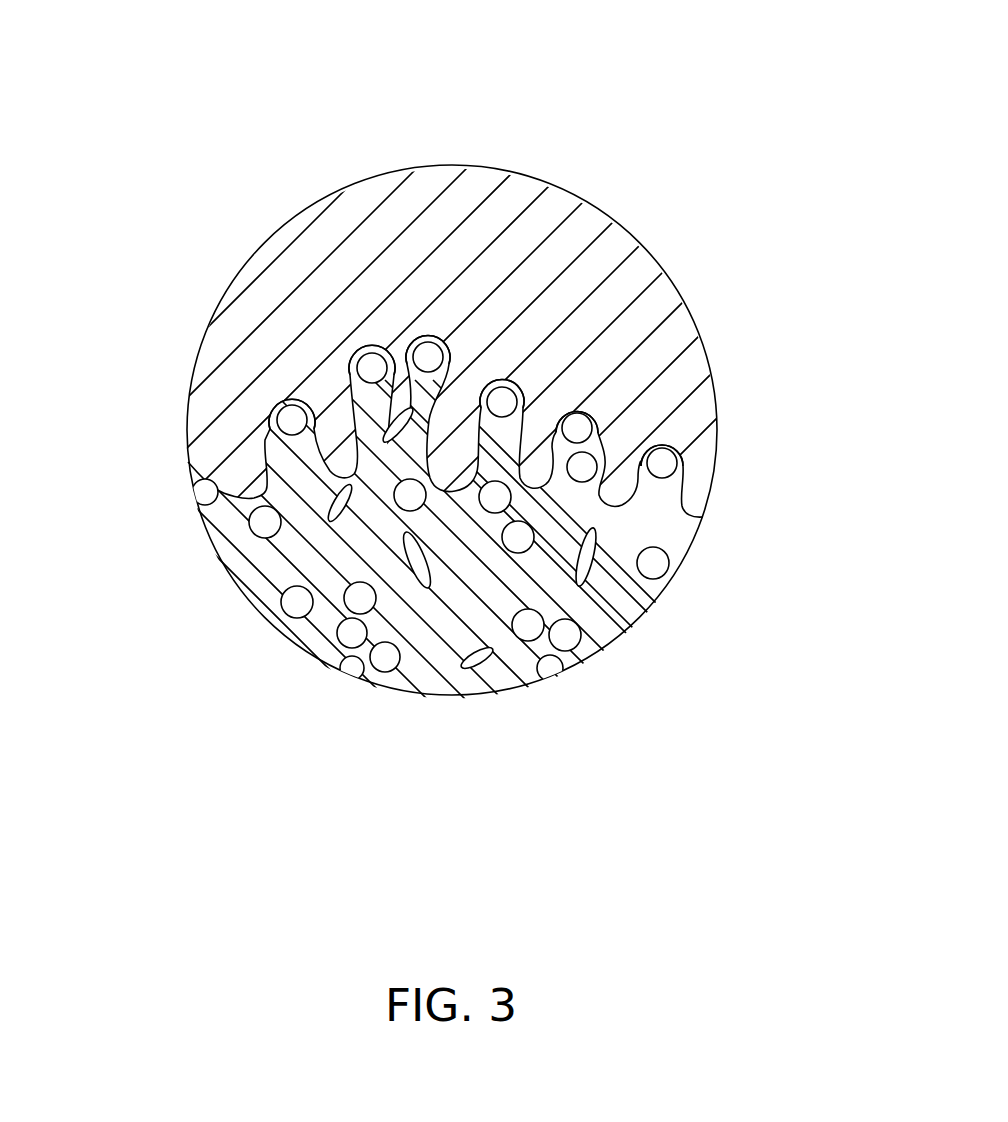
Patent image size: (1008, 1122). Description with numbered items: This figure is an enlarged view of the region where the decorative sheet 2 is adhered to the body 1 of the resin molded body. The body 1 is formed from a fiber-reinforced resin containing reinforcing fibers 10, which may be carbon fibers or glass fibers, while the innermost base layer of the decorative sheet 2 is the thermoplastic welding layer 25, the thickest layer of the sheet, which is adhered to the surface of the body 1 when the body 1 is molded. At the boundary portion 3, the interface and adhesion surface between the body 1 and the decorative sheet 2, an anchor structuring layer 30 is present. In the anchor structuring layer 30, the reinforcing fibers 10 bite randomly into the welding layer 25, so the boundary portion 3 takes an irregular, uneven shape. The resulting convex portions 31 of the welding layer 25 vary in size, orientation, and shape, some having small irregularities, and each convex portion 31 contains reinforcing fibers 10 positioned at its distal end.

The body 1 is at (443, 697).
The decorative sheet 2 is at (492, 350).
The welding layer 25 is at (479, 185).
The boundary portion 3 is at (703, 518).
The reinforcing fibers 10 is at (497, 398).
The anchor structuring layer 30 is at (632, 378).
The convex portion 31 is at (356, 352).